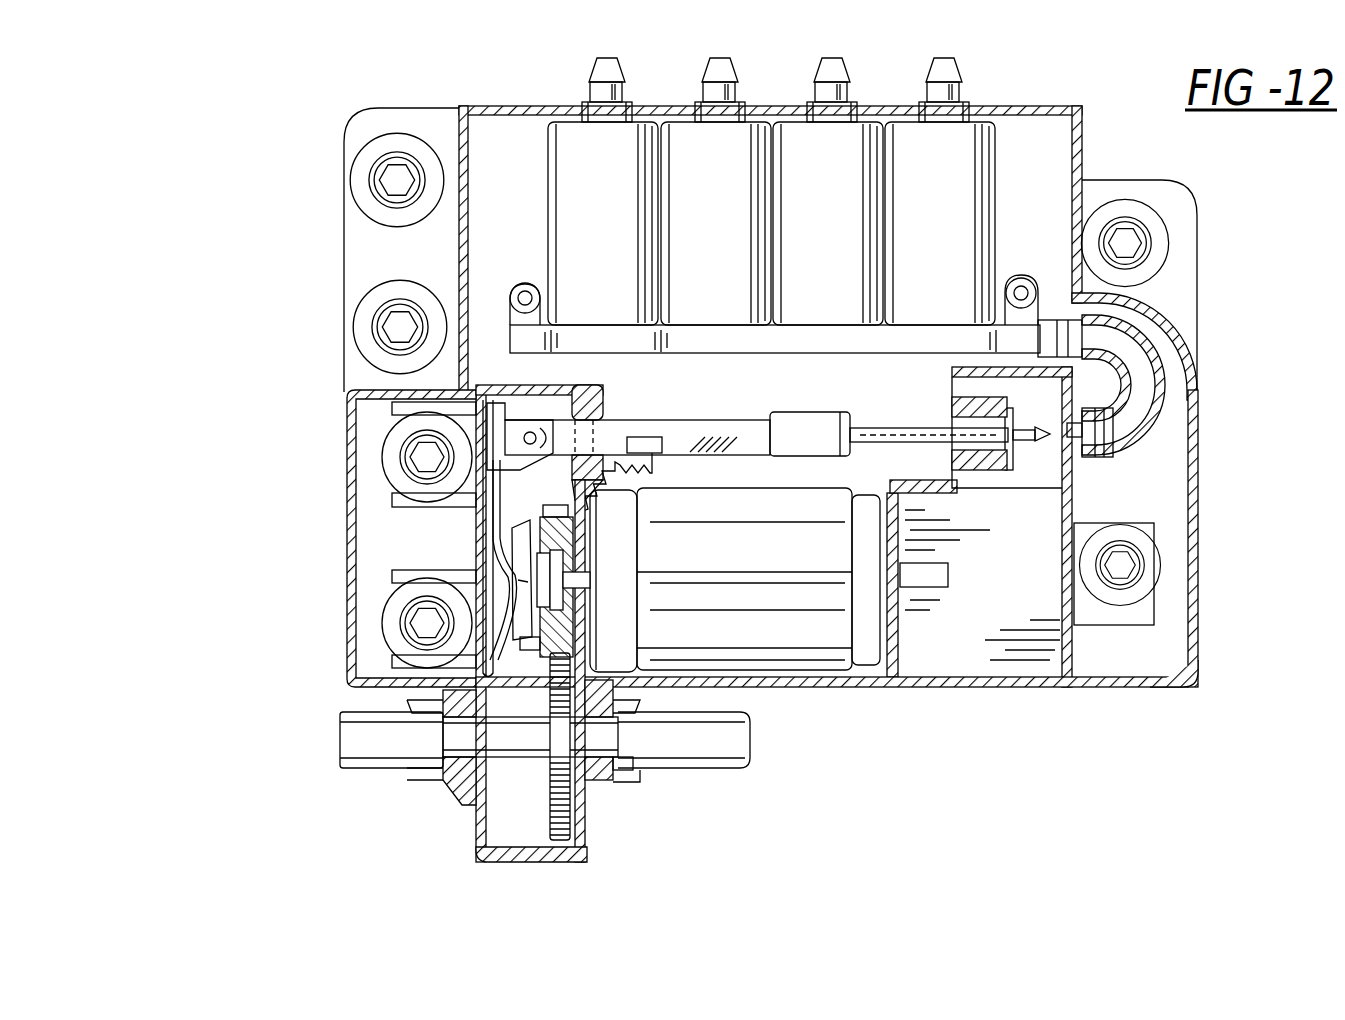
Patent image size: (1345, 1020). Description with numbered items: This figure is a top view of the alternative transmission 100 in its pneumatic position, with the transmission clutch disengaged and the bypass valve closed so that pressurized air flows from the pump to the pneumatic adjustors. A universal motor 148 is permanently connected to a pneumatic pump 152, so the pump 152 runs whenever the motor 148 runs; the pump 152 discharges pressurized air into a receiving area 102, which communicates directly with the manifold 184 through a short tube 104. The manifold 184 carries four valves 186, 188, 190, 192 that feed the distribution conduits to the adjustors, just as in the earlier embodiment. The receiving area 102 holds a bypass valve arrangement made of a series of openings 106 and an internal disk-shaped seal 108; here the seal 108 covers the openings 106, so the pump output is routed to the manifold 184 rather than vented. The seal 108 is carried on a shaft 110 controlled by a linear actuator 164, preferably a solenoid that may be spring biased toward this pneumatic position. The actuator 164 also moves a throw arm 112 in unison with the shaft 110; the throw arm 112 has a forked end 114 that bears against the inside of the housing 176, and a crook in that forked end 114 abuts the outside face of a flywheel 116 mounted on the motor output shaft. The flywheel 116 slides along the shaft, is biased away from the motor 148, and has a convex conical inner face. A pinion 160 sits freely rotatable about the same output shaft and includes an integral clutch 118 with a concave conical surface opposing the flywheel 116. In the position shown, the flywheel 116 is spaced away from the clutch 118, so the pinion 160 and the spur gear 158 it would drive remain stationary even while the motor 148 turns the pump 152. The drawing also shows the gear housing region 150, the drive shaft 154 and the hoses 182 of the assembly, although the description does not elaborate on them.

The transmission 100 is at (310, 156).
The receiving area 102 is at (1064, 470).
The short tube 104 is at (1190, 432).
The openings 106 is at (950, 408).
The internal disk-shaped seal 108 is at (1018, 470).
The shaft 110 is at (874, 435).
The throw arm 112 is at (500, 415).
The forked end 114 is at (497, 637).
The flywheel 116 is at (520, 543).
The clutch 118 is at (565, 644).
The universal motor 148 is at (765, 556).
The gear housing 150 is at (460, 866).
The pneumatic pump 152 is at (1002, 665).
The drive shaft 154 is at (527, 753).
The spur gear 158 is at (588, 842).
The pinion 160 is at (558, 475).
The linear actuator 164 is at (778, 420).
The housing 176 is at (1156, 688).
The hose 182 is at (365, 755).
The manifold 184 is at (650, 355).
The valve 186 is at (687, 137).
The valve 188 is at (566, 138).
The valve 190 is at (793, 140).
The valve 192 is at (907, 140).